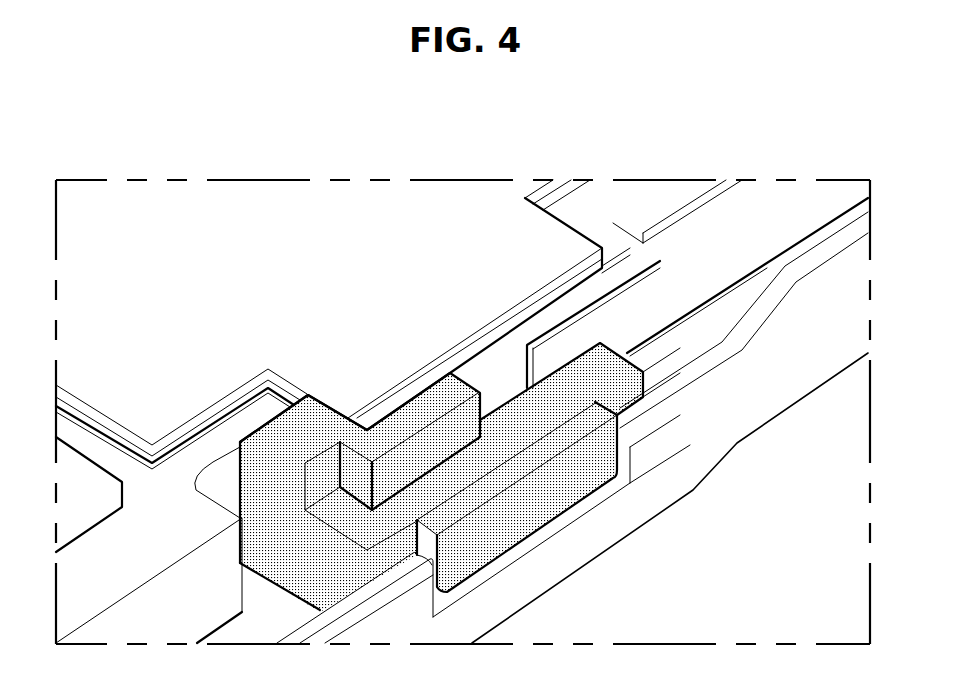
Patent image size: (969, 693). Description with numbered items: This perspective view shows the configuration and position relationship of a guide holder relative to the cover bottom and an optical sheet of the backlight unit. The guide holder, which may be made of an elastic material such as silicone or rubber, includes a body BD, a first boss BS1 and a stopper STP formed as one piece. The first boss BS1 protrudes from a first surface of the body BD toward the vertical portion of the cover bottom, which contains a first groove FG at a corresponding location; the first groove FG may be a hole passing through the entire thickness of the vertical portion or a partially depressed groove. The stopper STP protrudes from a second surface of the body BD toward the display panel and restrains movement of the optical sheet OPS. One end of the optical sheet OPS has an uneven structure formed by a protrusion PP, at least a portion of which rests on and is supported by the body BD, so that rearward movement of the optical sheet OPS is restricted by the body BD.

The optical sheet OPS is at (369, 196).
The protrusion PP is at (440, 300).
The stopper STP is at (268, 460).
The body BD is at (442, 514).
The first groove FG is at (476, 588).
The first boss BS1 is at (534, 510).